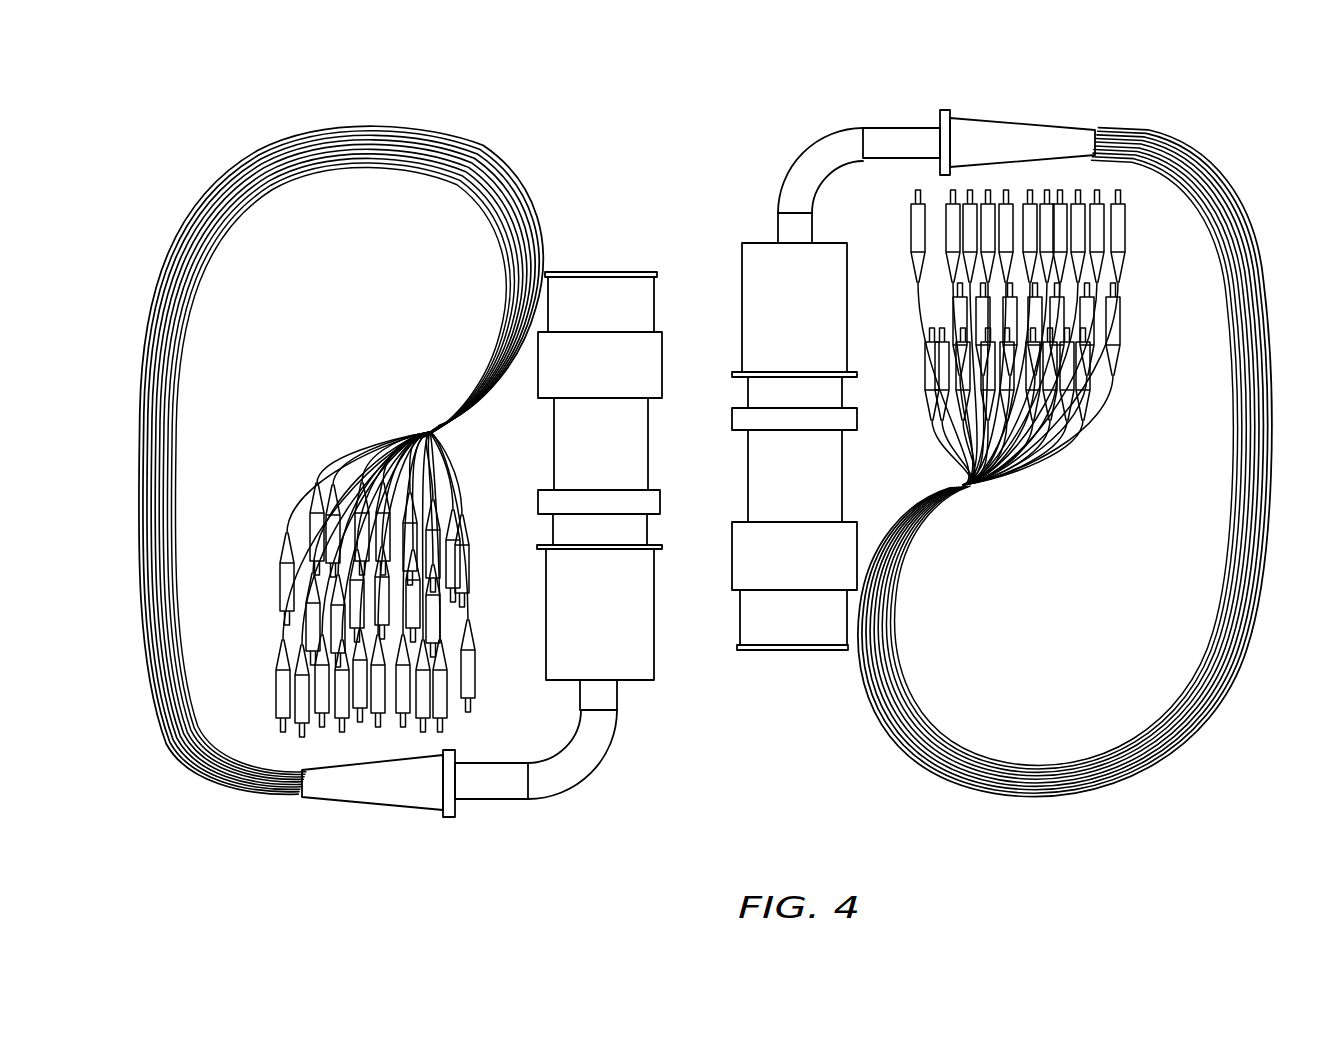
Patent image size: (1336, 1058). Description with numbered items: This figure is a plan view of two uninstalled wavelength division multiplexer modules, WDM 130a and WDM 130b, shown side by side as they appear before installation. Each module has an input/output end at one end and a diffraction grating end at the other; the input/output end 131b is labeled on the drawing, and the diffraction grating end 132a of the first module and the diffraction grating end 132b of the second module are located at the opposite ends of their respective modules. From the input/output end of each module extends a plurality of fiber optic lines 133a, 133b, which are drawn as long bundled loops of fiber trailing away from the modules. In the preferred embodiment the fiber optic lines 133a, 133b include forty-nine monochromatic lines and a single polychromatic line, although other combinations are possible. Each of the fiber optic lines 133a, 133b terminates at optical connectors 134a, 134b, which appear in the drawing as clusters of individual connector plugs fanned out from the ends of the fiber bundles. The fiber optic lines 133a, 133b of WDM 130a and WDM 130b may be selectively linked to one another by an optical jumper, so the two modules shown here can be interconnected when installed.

The WDM 130a is at (542, 104).
The WDM 130b is at (784, 752).
The input/output end 131b is at (566, 681).
The diffraction grating end 132a is at (572, 271).
The diffraction grating end 132b is at (820, 651).
The fiber optic lines 133a is at (140, 465).
The fiber optic lines 133b is at (1262, 305).
The optical connectors 134a is at (277, 712).
The optical connectors 134b is at (1120, 232).